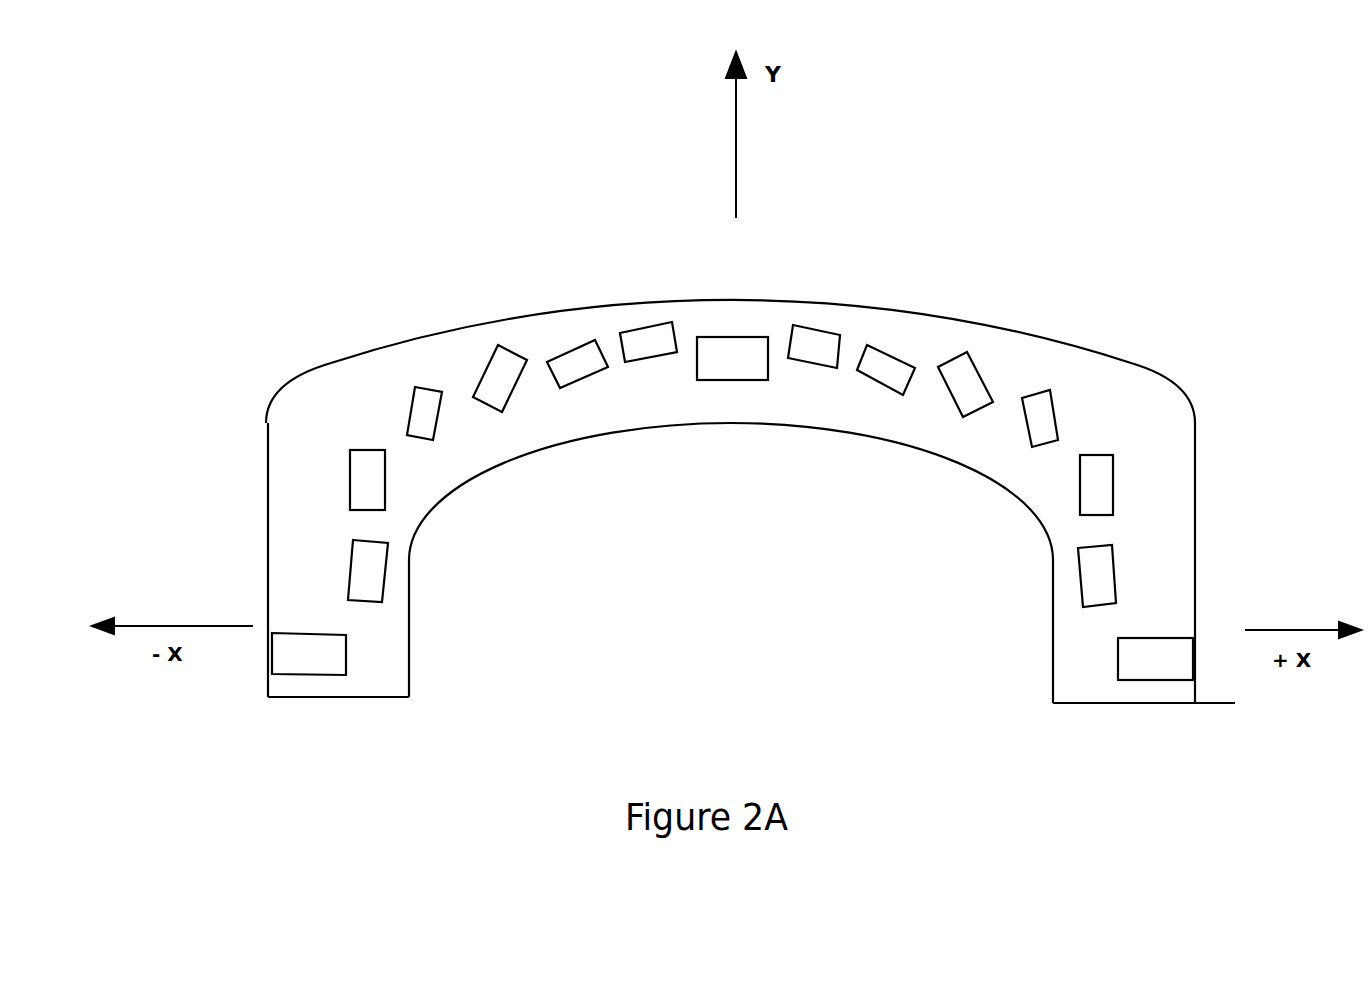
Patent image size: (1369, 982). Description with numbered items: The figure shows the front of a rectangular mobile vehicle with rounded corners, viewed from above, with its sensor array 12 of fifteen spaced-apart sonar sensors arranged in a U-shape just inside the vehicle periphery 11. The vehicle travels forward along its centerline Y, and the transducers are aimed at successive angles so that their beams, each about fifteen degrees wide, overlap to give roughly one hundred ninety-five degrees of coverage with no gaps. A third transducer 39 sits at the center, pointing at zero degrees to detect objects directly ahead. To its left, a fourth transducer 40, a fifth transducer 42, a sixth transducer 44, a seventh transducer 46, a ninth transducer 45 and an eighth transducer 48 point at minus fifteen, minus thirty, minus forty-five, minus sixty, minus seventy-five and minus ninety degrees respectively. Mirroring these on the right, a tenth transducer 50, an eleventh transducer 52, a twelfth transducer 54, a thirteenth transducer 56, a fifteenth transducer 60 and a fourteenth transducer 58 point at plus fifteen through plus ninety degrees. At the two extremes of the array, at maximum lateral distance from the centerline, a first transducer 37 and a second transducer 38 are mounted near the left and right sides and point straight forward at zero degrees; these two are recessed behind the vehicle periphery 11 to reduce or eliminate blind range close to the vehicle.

The vehicle periphery 11 is at (860, 307).
The sensor array 12 is at (372, 686).
The first transducer 37 is at (328, 650).
The second transducer 38 is at (1135, 655).
The third transducer 39 is at (752, 375).
The fourth transducer 40 is at (650, 340).
The fifth transducer 42 is at (573, 365).
The sixth transducer 44 is at (507, 378).
The ninth transducer 45 is at (368, 573).
The seventh transducer 46 is at (428, 422).
The eighth transducer 48 is at (375, 485).
The tenth transducer 50 is at (817, 347).
The eleventh transducer 52 is at (890, 368).
The twelfth transducer 54 is at (957, 380).
The thirteenth transducer 56 is at (1040, 425).
The fourteenth transducer 58 is at (1092, 490).
The fifteenth transducer 60 is at (1095, 578).